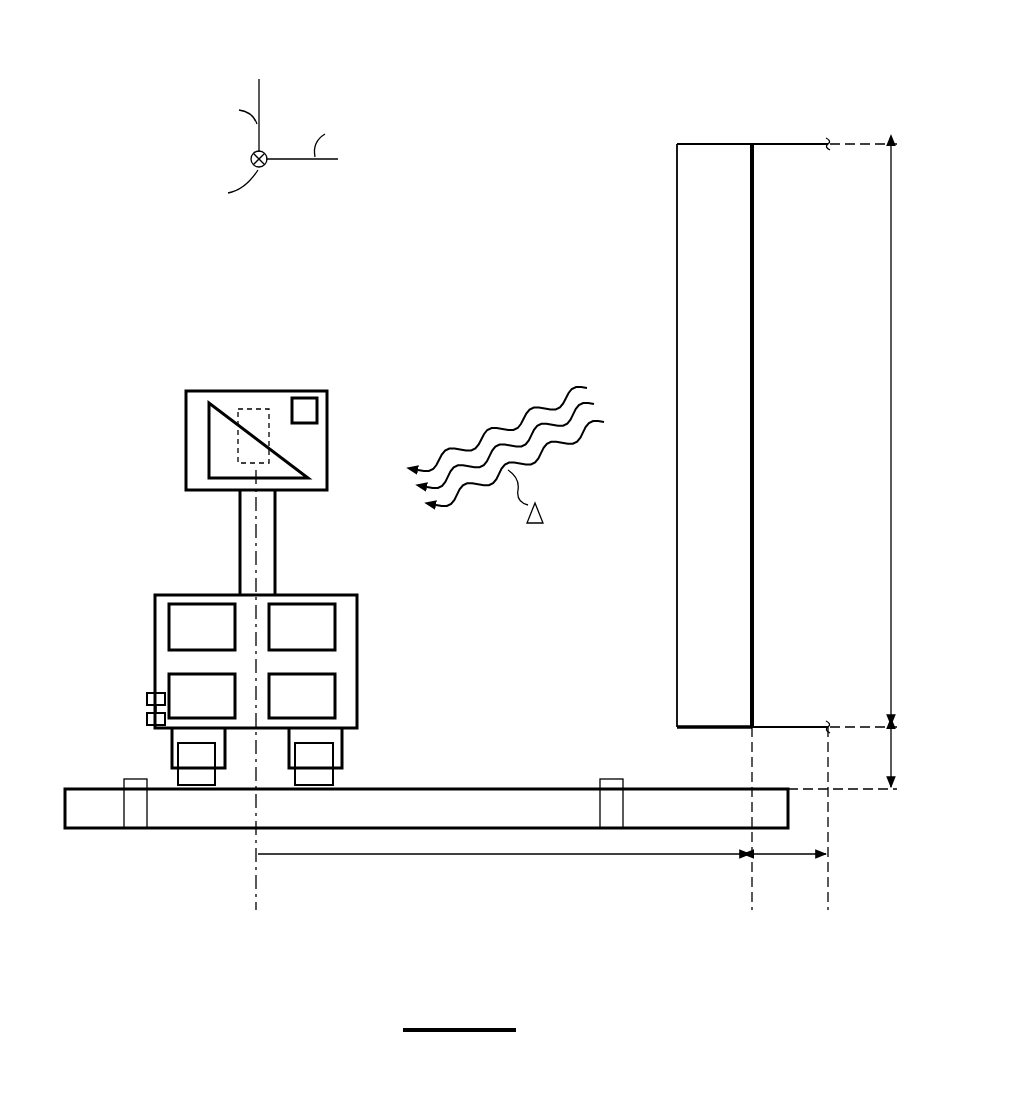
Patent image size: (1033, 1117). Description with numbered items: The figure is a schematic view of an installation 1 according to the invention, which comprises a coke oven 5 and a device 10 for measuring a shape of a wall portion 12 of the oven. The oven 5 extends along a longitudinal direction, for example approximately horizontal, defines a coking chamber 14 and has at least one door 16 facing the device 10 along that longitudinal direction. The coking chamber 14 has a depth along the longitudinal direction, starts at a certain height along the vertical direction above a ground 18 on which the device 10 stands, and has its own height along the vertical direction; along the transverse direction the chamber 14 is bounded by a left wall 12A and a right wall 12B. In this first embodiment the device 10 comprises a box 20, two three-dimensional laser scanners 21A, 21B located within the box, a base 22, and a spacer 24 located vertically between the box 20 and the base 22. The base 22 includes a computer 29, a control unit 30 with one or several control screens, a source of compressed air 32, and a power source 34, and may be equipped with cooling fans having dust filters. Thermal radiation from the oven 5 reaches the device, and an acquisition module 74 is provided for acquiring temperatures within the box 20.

The installation 1 is at (89, 100).
The coke oven 5 is at (673, 125).
The device 10 is at (99, 447).
The wall portion 12 is at (836, 380).
The coking chamber 14 is at (836, 441).
The door 16 is at (685, 313).
The ground 18 is at (440, 783).
The box 20 is at (334, 448).
The 3D laser scanner 21A is at (247, 418).
The 3D laser scanner 21B is at (262, 428).
The base 22 is at (120, 595).
The spacer 24 is at (258, 552).
The computer 29 is at (216, 640).
The control unit 30 is at (316, 640).
The source of compressed air 32 is at (216, 709).
The power source 34 is at (316, 709).
The acquisition module 74 is at (308, 408).
The left wall 12A is at (657, 573).
The right wall 12B is at (660, 658).